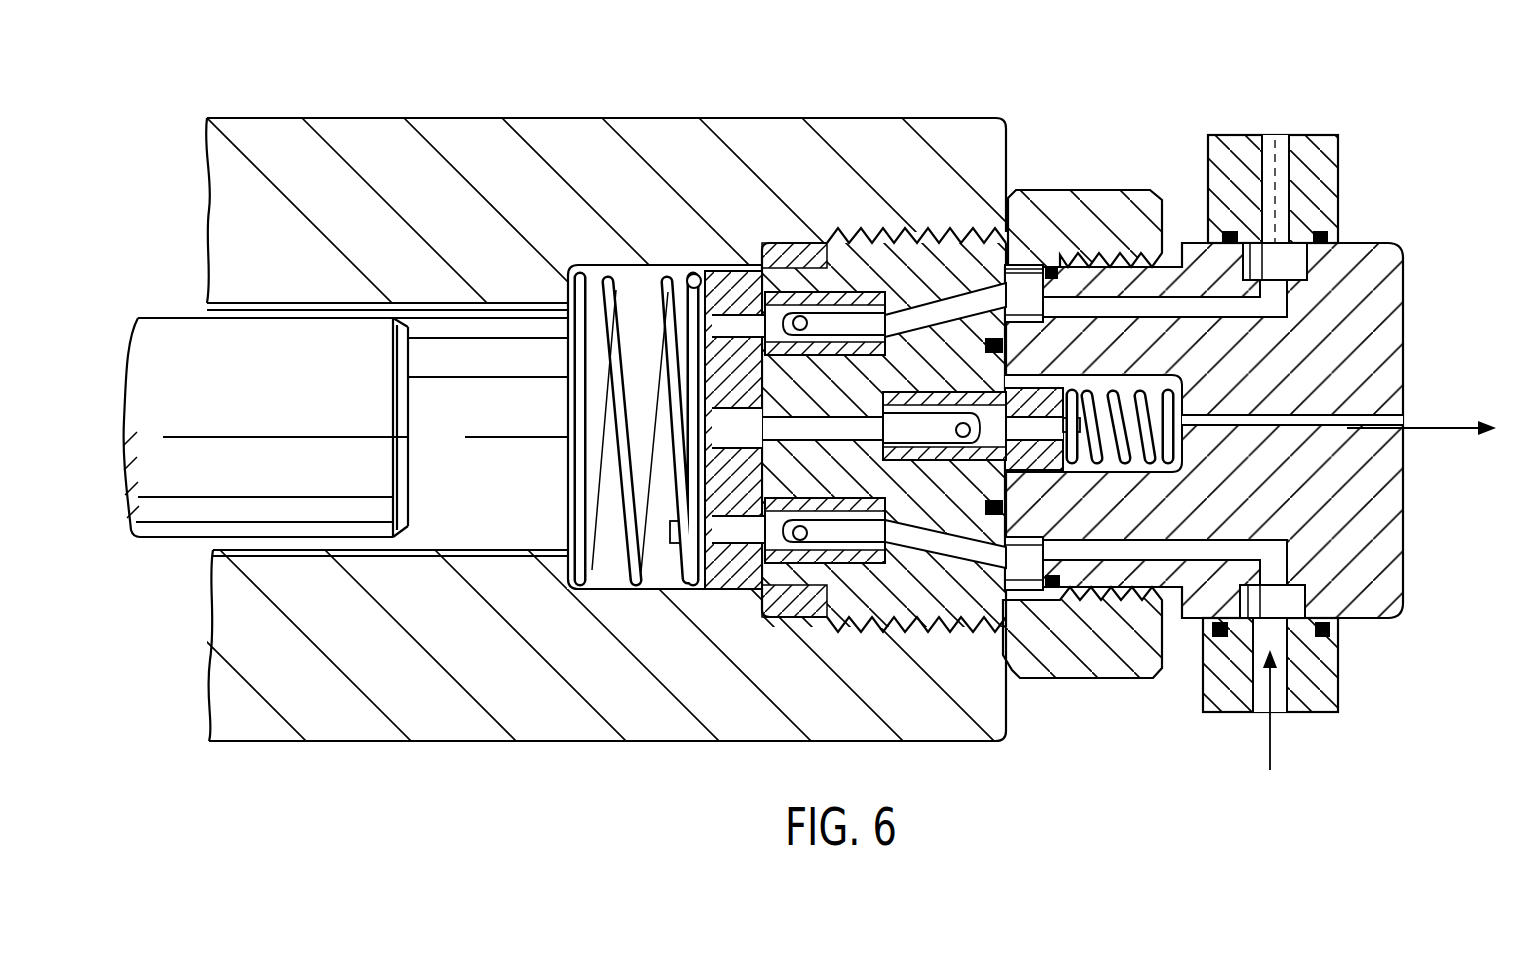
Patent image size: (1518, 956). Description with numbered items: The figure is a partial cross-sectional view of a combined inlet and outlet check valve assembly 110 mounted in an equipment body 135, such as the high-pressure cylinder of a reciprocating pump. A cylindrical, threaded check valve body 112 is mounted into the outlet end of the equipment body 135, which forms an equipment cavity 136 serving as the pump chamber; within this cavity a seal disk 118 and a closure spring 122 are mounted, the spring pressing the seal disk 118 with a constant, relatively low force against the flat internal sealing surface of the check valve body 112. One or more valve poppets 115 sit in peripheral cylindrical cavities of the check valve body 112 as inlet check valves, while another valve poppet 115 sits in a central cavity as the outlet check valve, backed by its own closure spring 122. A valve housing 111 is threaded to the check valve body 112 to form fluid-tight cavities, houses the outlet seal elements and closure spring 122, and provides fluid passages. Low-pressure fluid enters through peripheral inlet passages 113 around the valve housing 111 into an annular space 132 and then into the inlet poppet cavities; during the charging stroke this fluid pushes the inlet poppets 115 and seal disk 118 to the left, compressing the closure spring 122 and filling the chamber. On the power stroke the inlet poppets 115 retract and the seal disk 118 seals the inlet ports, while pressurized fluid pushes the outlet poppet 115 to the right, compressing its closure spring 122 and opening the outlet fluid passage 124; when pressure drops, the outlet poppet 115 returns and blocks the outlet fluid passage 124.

The check valve assembly 110 is at (1424, 368).
The valve housing 111 is at (1383, 270).
The check valve body 112 is at (1085, 207).
The peripheral inlet passages 113 is at (1166, 305).
The valve poppet 115 is at (760, 282).
The seal disk 118 is at (722, 282).
The closure spring 122 is at (633, 592).
The outlet fluid passage 124 is at (915, 315).
The annular space 132 is at (1012, 592).
The equipment body 135 is at (411, 142).
The equipment cavity 136 is at (453, 515).